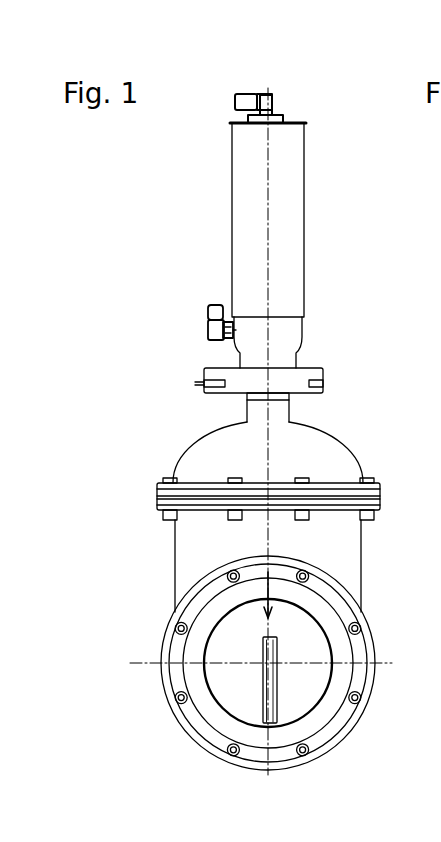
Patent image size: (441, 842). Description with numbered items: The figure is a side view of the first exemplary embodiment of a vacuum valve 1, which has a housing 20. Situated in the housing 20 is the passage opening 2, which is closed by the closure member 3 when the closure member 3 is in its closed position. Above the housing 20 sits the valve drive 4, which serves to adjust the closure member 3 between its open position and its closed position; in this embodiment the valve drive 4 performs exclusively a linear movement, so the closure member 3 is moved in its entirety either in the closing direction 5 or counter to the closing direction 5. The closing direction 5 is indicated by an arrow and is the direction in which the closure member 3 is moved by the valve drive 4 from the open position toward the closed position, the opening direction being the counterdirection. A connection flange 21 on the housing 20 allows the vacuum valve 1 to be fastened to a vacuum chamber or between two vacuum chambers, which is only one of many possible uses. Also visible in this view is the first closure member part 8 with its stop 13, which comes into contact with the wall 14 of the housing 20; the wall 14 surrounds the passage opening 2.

The vacuum valve 1 is at (307, 220).
The passage opening 2 is at (302, 654).
The closure member 3 is at (230, 686).
The valve drive 4 is at (243, 257).
The closing direction 5 is at (266, 590).
The first closure member part 8 is at (244, 633).
The stop 13 is at (279, 702).
The wall 14 is at (285, 718).
The housing 20 is at (190, 543).
The connection flange 21 is at (362, 668).